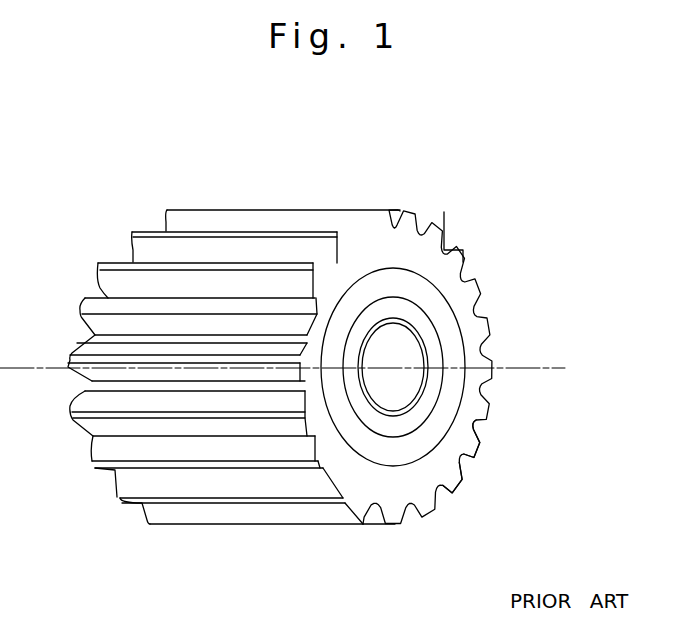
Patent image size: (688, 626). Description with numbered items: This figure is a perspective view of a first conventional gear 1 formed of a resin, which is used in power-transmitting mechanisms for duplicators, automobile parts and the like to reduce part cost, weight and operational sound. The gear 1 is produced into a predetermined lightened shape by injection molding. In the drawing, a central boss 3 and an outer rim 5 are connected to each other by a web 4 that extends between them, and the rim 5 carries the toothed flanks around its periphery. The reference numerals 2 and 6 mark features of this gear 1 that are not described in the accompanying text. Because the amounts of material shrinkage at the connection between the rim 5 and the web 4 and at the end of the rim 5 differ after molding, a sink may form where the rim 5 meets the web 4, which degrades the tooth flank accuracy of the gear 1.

The gear 1 is at (449, 217).
The shaft hole 2 is at (413, 349).
The boss 3 is at (425, 316).
The web 4 is at (357, 291).
The rim 5 is at (455, 437).
The tooth root 6 is at (450, 478).